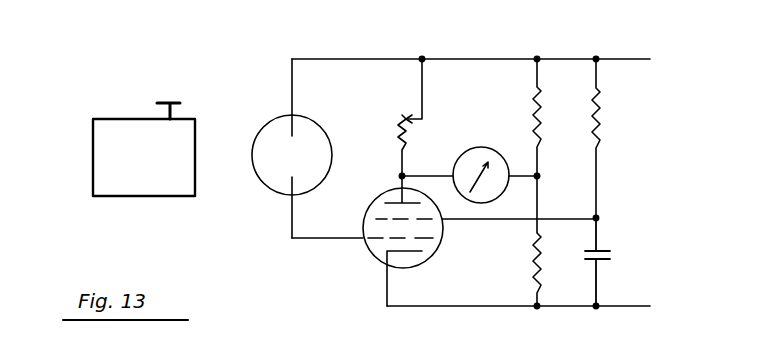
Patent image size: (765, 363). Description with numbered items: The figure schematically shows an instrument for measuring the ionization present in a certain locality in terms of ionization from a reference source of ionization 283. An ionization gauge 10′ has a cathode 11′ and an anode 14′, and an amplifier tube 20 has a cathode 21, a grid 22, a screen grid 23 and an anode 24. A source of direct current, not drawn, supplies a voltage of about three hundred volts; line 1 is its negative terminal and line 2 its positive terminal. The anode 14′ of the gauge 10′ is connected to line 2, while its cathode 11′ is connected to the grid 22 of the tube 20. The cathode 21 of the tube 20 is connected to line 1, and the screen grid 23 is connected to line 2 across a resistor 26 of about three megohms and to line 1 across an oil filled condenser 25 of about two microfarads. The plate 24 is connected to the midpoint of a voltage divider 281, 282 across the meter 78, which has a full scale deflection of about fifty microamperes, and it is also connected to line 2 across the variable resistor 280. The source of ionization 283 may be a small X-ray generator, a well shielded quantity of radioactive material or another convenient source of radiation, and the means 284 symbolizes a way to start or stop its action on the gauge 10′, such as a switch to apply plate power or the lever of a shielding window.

The line 1 is at (633, 300).
The line 2 is at (628, 52).
The ionization gauge 10′ is at (261, 123).
The anode 14′ is at (293, 122).
The cathode 11′ is at (292, 196).
The amplifier tube 20 is at (367, 250).
The cathode 21 is at (389, 267).
The grid 22 is at (363, 235).
The screen grid 23 is at (447, 222).
The anode 24 is at (401, 188).
The oil filled condenser 25 is at (605, 245).
The resistor 26 is at (608, 118).
The meter 78 is at (485, 147).
The variable resistor 280 is at (398, 112).
The voltage divider 281 is at (532, 100).
The voltage divider 282 is at (530, 263).
The source of ionization 283 is at (90, 165).
The means to start or stop action 284 is at (157, 103).